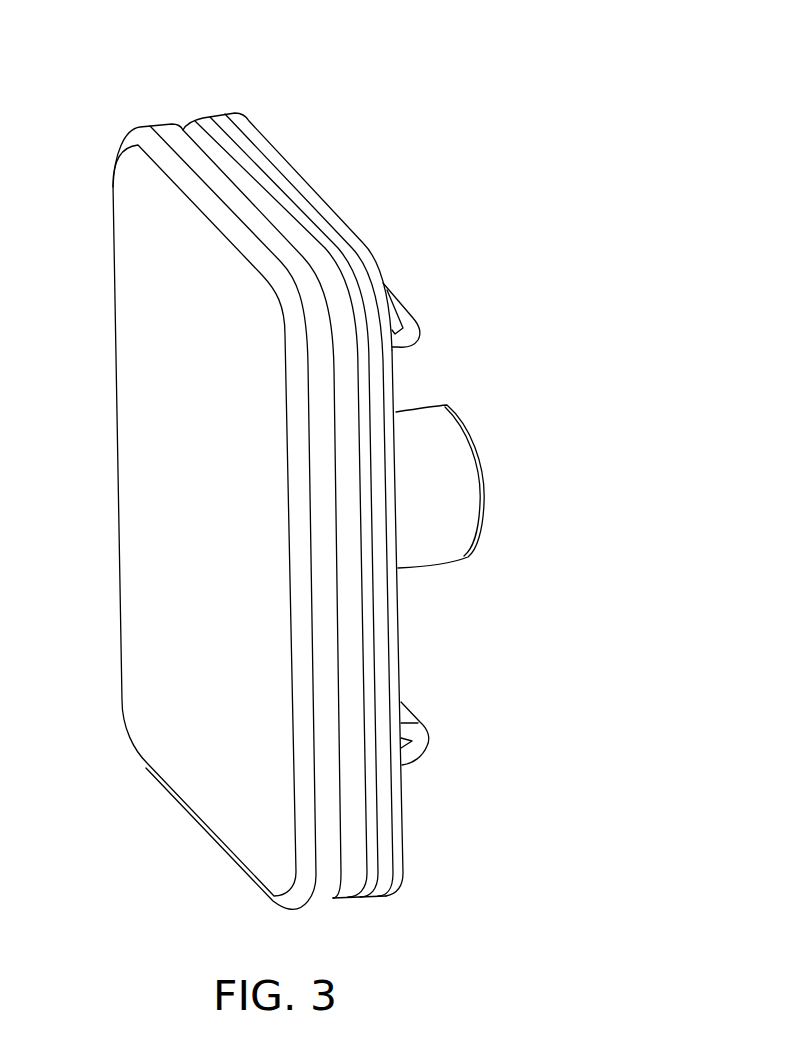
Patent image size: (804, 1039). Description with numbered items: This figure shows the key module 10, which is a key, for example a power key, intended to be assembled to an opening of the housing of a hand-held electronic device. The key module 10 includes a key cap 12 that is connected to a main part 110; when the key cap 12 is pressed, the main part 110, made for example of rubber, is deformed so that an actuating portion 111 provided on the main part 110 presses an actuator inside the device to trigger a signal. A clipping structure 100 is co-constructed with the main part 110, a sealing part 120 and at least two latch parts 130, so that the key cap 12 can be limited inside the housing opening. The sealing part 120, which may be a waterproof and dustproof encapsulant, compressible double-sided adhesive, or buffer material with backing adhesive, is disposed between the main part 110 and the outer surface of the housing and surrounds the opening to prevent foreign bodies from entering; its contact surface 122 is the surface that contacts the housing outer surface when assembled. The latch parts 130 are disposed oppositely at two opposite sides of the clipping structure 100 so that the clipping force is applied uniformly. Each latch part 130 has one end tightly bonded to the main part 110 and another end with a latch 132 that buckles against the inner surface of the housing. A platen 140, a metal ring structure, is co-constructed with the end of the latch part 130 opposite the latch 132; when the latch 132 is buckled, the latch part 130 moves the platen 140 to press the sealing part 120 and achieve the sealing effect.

The key module 10 is at (412, 95).
The key cap 12 is at (135, 238).
The clipping structure 100 is at (308, 150).
The main part 110 is at (187, 122).
The actuating portion 111 is at (462, 477).
The sealing part 120 is at (365, 250).
The contact surface 122 is at (400, 623).
The latch part 130 is at (398, 347).
The latch 132 is at (402, 300).
The platen 140 is at (248, 145).